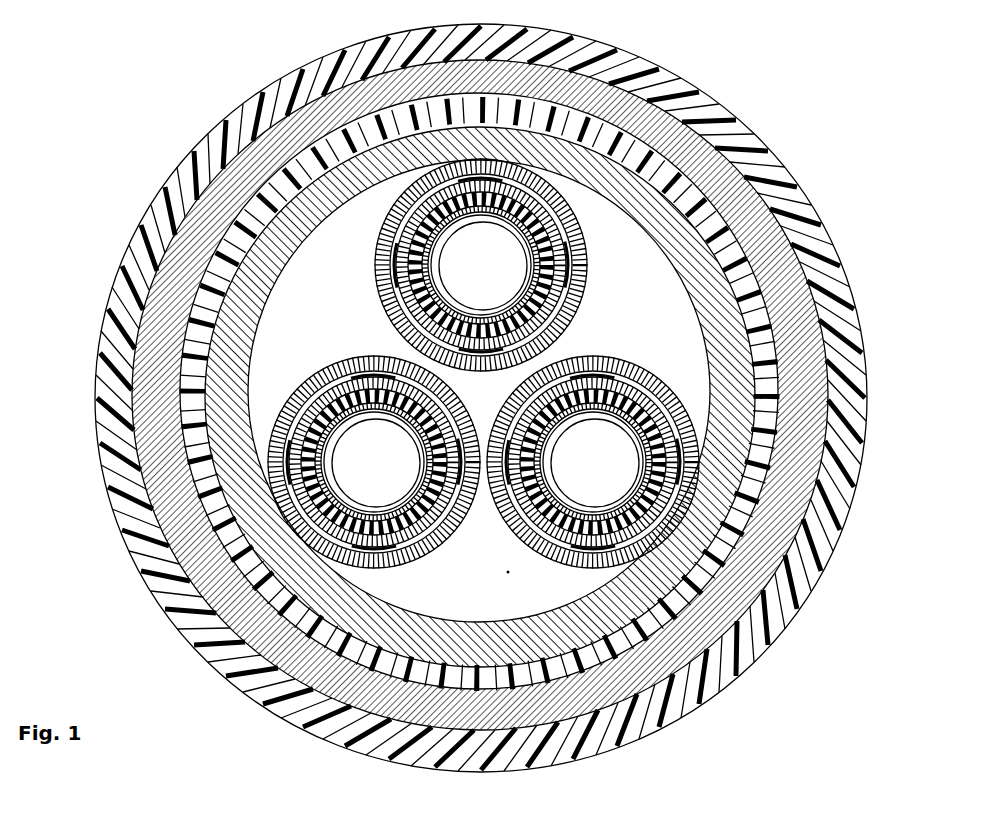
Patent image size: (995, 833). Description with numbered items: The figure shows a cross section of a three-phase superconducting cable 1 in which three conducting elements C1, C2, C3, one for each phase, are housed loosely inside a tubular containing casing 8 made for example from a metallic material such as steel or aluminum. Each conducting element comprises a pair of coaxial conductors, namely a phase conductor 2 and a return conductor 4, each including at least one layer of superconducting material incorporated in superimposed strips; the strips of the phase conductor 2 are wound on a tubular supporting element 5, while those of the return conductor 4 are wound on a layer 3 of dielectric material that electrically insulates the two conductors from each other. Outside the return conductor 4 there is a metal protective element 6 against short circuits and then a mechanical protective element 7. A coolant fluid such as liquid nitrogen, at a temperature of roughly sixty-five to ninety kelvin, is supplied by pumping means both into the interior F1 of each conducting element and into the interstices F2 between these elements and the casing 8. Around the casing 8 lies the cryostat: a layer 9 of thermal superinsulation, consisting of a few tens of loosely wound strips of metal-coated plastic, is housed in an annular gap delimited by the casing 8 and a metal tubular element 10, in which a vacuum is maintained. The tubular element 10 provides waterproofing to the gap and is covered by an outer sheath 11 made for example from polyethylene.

The three-phase superconducting cable 1 is at (478, 388).
The phase conductor 2 is at (330, 62).
The layer of dielectric material 3 is at (435, 160).
The return conductor 4 is at (490, 195).
The tubular supporting element 5 is at (282, 94).
The metal protective element 6 is at (602, 46).
The mechanical protective element 7 is at (560, 142).
The tubular containing casing 8 is at (245, 305).
The layer of insulating material 9 is at (215, 250).
The tubular element 10 is at (200, 200).
The outer sheath 11 is at (230, 148).
The conducting element C1 is at (282, 405).
The conducting element C2 is at (668, 385).
The conducting element C3 is at (592, 266).
The interior of the conducting element F1 is at (488, 267).
The interstices F2 is at (508, 572).